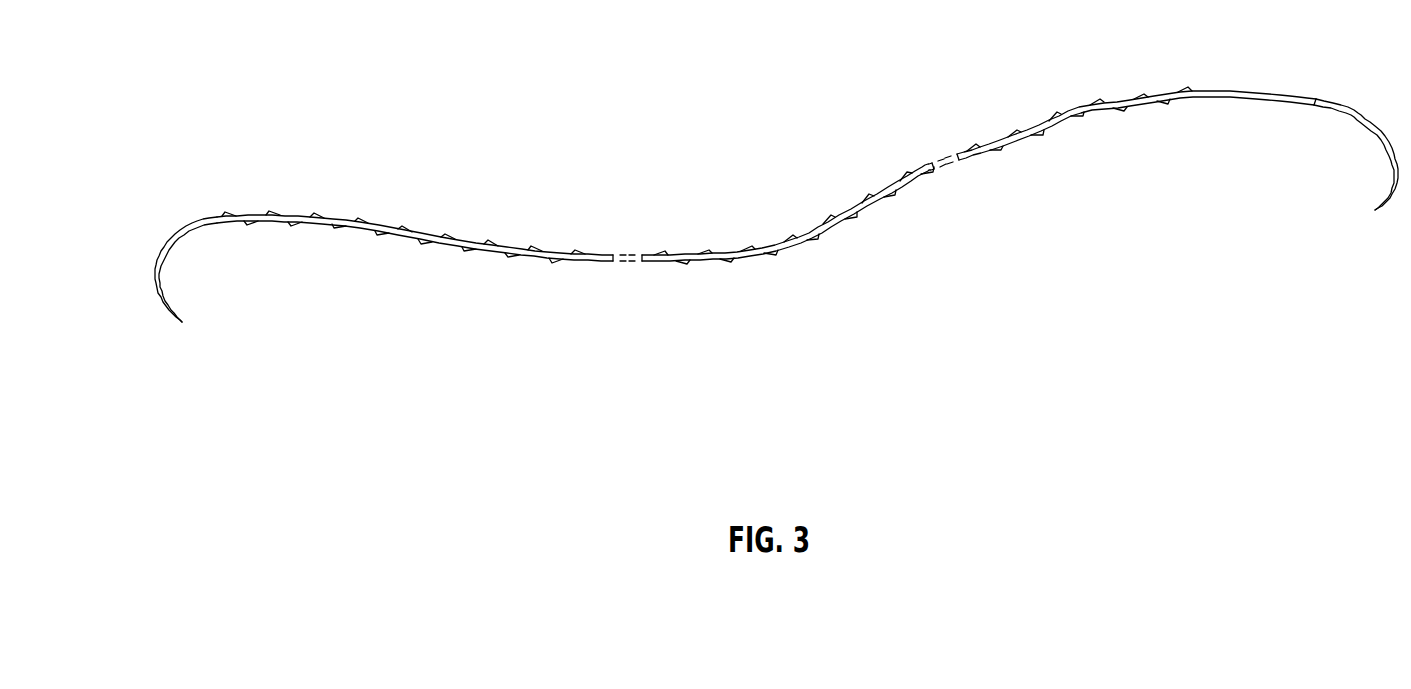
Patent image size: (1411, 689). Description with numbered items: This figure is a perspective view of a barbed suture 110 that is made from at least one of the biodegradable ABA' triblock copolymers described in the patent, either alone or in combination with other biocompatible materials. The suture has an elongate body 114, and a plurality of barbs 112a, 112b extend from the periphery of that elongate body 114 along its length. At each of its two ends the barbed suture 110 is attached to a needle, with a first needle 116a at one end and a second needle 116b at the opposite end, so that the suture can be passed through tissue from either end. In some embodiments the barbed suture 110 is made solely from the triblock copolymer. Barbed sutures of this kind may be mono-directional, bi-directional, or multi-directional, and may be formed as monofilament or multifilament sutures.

The barbed suture 110 is at (735, 186).
The barbs 112a is at (528, 259).
The barbs 112b is at (1080, 108).
The elongate body 114 is at (730, 248).
The needle 116a is at (165, 257).
The needle 116b is at (1348, 104).